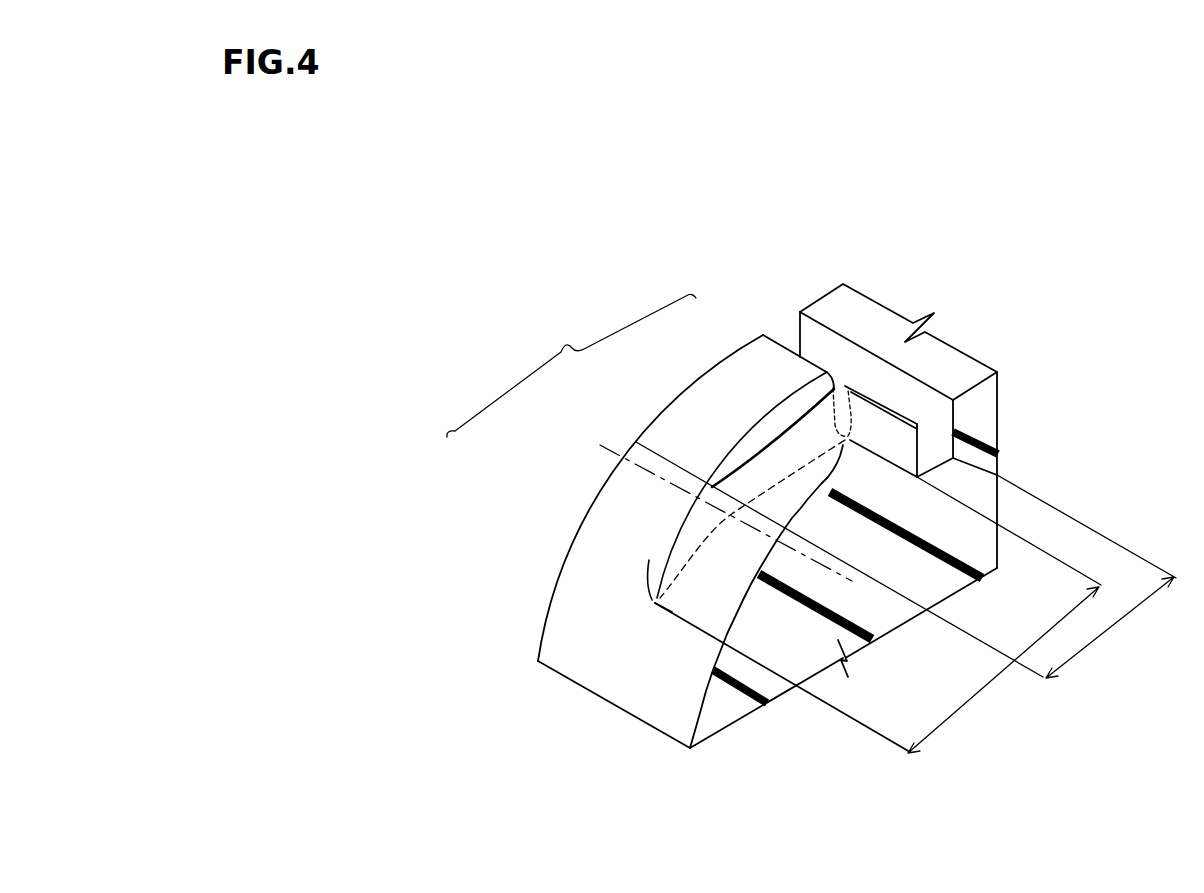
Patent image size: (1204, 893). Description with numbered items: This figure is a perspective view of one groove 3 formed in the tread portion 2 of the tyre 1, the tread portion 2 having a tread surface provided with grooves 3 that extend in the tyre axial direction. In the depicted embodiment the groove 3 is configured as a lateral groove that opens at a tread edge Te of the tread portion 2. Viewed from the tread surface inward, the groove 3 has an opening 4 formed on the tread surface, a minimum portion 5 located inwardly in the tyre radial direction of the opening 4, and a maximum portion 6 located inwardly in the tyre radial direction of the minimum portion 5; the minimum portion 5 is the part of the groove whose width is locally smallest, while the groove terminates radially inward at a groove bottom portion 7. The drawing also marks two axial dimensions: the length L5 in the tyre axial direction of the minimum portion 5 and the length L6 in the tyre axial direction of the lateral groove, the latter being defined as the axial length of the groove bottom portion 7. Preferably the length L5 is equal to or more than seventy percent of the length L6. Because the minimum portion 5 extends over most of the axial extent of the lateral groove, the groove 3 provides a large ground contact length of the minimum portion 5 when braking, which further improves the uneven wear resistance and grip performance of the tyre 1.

The tyre 1 is at (900, 189).
The tread portion 2 is at (789, 257).
The groove 3 is at (571, 365).
The opening 4 is at (782, 389).
The minimum portion 5 is at (737, 442).
The maximum portion 6 is at (669, 572).
The groove bottom portion 7 is at (653, 587).
The tread edge Te is at (606, 450).
The length in the tyre axial direction of the minimum portion L5 is at (1086, 576).
The length in the tyre axial direction of the lateral groove L6 is at (1004, 615).